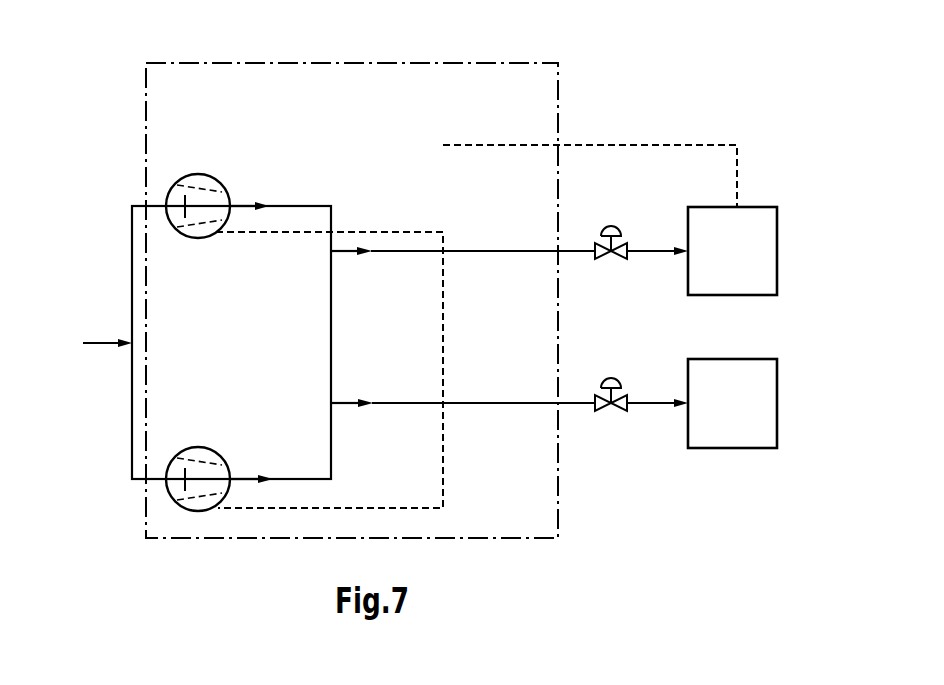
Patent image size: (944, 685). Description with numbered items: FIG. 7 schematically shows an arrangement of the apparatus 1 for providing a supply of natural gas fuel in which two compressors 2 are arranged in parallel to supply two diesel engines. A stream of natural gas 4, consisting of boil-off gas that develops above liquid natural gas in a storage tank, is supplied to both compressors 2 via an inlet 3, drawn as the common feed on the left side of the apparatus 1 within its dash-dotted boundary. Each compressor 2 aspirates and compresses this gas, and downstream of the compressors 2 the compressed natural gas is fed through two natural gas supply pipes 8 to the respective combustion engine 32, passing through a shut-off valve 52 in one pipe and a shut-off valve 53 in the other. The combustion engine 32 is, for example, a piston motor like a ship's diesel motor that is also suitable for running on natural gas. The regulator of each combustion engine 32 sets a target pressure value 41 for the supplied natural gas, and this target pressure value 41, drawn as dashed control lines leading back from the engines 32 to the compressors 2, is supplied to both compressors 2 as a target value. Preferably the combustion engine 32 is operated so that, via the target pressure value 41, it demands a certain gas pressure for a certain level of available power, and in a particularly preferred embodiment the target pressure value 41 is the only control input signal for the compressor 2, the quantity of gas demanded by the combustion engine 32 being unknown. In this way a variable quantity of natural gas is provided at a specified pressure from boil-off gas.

The apparatus 1 is at (497, 62).
The compressor 2 is at (208, 185).
The inlet 3 is at (128, 347).
The stream of natural gas 4 is at (90, 344).
The natural gas supply pipe 8 is at (475, 252).
The combustion engine 32 is at (770, 257).
The target pressure value 41 is at (367, 232).
The shut-off valve 52 is at (598, 254).
The shut-off valve 53 is at (598, 406).